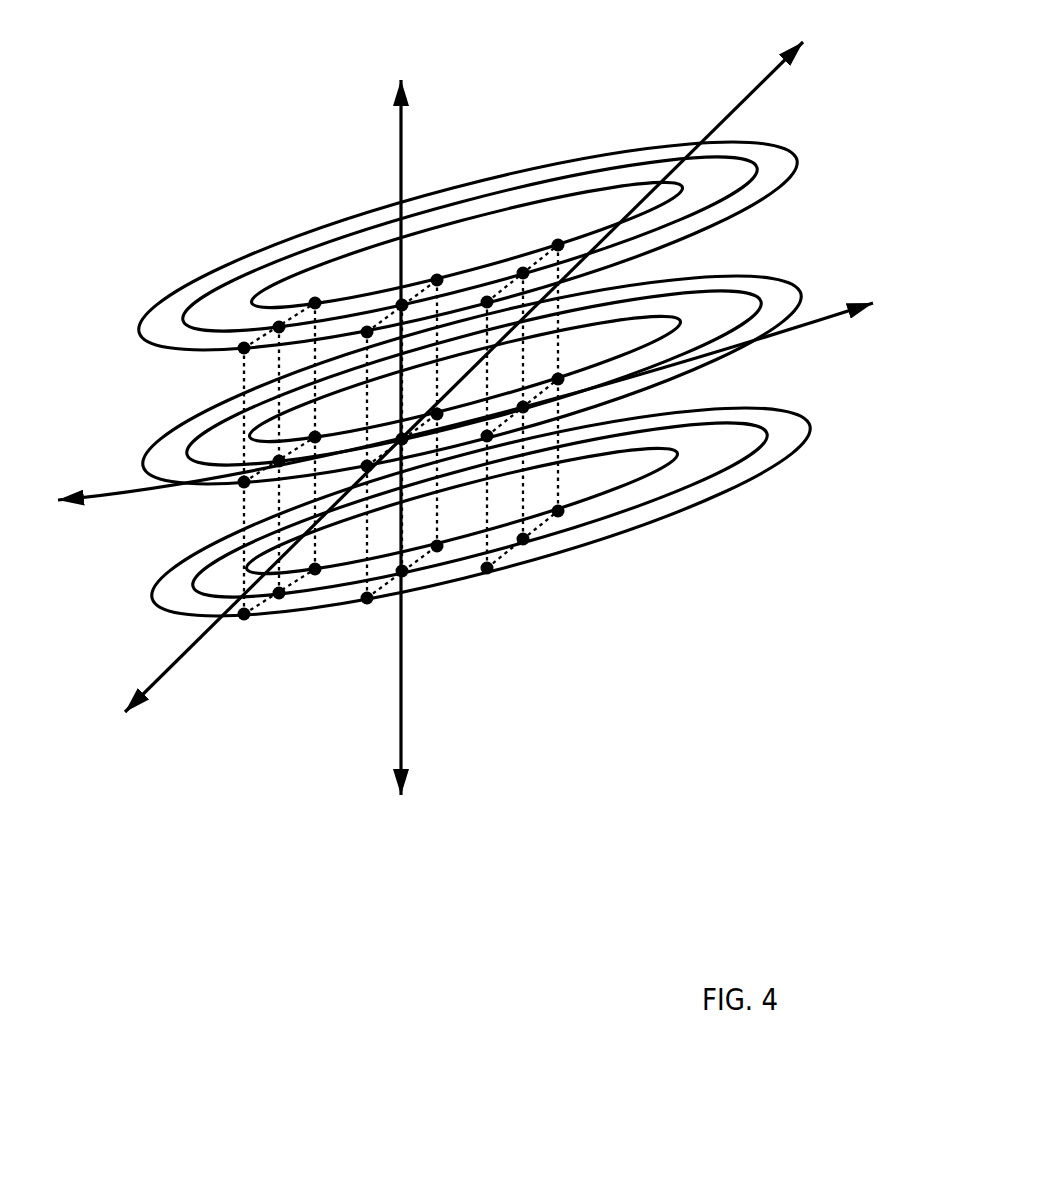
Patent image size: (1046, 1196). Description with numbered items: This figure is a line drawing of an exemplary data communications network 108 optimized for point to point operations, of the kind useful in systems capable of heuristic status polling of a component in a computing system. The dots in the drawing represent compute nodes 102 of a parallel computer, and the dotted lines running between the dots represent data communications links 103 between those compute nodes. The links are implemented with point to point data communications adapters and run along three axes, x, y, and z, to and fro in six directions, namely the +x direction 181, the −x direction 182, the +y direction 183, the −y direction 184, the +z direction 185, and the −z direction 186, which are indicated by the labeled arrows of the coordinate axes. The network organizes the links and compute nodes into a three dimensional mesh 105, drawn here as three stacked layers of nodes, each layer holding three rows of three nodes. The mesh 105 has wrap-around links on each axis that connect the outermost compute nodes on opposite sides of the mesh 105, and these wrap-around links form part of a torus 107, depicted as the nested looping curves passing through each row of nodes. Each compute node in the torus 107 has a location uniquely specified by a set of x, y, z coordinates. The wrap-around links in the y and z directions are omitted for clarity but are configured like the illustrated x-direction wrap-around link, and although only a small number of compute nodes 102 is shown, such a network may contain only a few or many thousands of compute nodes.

The compute nodes 102 is at (558, 512).
The data communications links 103 is at (245, 508).
The three dimensional mesh 105 is at (557, 246).
The torus 107 is at (232, 258).
The data communications network optimized for point to point operations 108 is at (467, 533).
The +x direction 181 is at (910, 335).
The −x direction 182 is at (55, 540).
The +y direction 183 is at (848, 70).
The −y direction 184 is at (122, 764).
The +z direction 185 is at (418, 73).
The −z direction 186 is at (420, 862).